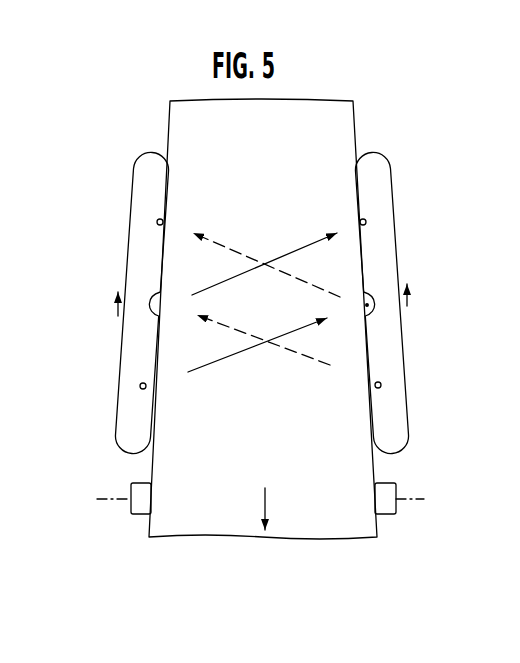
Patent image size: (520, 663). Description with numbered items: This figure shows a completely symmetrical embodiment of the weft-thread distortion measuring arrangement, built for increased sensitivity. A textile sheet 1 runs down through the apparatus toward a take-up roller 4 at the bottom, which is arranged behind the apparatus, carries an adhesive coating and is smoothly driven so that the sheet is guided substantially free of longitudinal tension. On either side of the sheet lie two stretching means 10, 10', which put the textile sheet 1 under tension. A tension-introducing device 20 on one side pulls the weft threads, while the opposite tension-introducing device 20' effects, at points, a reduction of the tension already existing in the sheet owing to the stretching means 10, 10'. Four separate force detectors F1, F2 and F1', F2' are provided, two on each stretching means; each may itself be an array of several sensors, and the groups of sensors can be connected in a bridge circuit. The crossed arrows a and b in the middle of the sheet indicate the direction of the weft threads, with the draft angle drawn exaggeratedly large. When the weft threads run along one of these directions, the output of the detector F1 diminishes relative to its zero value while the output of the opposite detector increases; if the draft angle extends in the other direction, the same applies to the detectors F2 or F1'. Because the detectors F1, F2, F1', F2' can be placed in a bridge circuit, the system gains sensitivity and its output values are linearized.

The textile sheet 1 is at (361, 526).
The take-up roller 4 is at (388, 509).
The stretching means 10 is at (403, 302).
The stretching means 10' is at (112, 302).
The tension-introducing device 20 is at (404, 310).
The tension-introducing device 20' is at (121, 318).
The force detector F1 is at (395, 222).
The force detector F2 is at (409, 391).
The force detector F1' is at (117, 228).
The force detector F2' is at (109, 389).
The first diagonal direction a is at (312, 244).
The second diagonal direction b is at (225, 247).